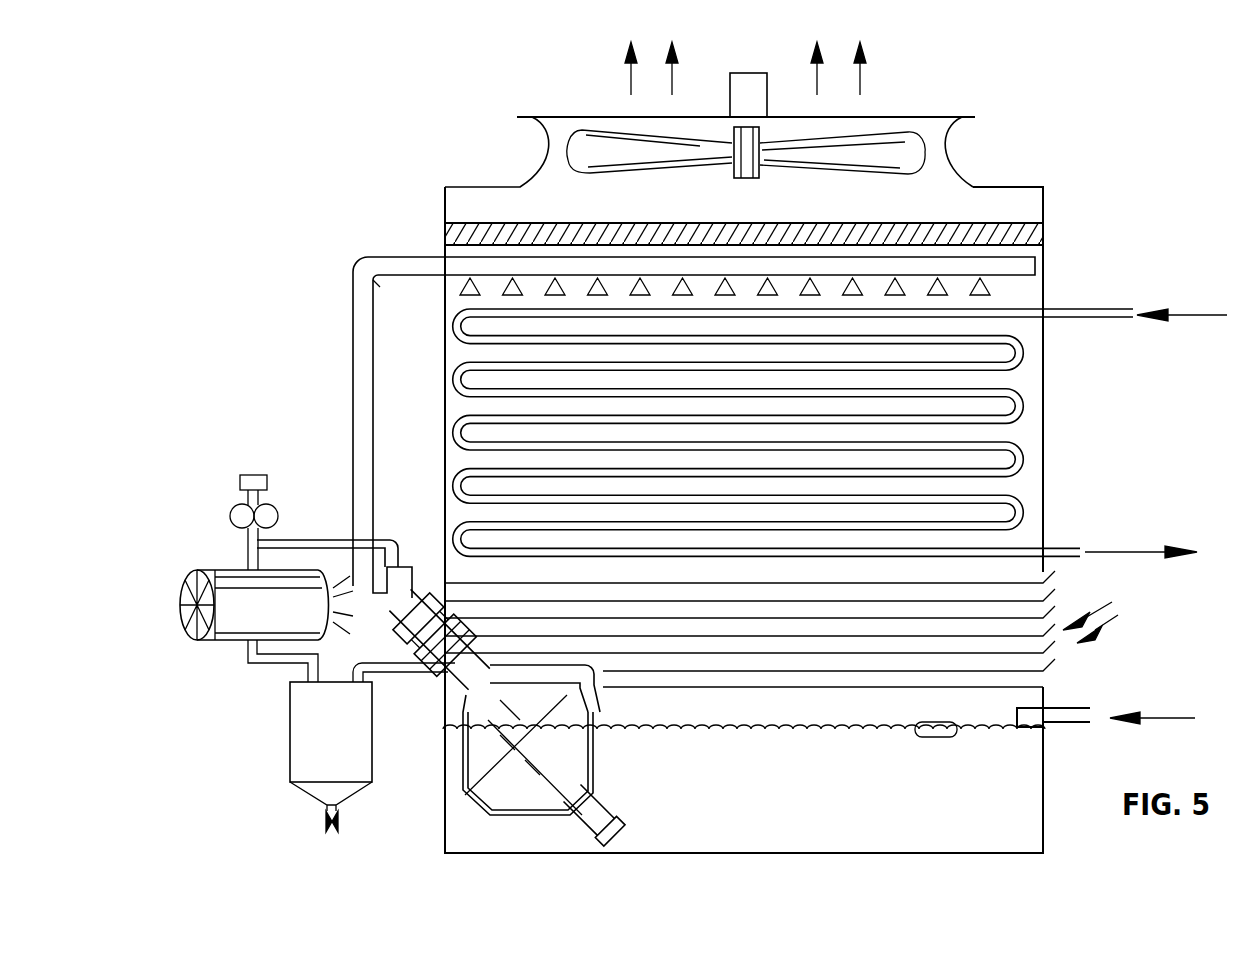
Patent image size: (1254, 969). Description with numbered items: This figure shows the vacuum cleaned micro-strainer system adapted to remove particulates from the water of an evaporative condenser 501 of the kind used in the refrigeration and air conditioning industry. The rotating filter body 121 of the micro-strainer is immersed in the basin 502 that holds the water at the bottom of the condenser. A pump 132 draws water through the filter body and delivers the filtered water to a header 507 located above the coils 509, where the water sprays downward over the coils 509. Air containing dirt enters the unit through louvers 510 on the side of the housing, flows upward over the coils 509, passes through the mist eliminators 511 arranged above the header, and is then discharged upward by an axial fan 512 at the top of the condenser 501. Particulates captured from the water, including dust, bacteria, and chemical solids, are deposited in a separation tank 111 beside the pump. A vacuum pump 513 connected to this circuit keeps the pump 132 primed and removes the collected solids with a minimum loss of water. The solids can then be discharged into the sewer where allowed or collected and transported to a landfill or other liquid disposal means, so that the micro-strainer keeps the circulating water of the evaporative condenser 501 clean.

The evaporative condenser 501 is at (767, 114).
The axial fan 512 is at (907, 160).
The mist eliminators 511 is at (1043, 232).
The header 507 is at (433, 251).
The coils 509 is at (1005, 443).
The louvers 510 is at (1053, 637).
The vacuum pump 513 is at (242, 503).
The pump 132 is at (218, 563).
The separation tank 111 is at (290, 752).
The rotating filter body 121 is at (500, 822).
The basin 502 is at (562, 856).